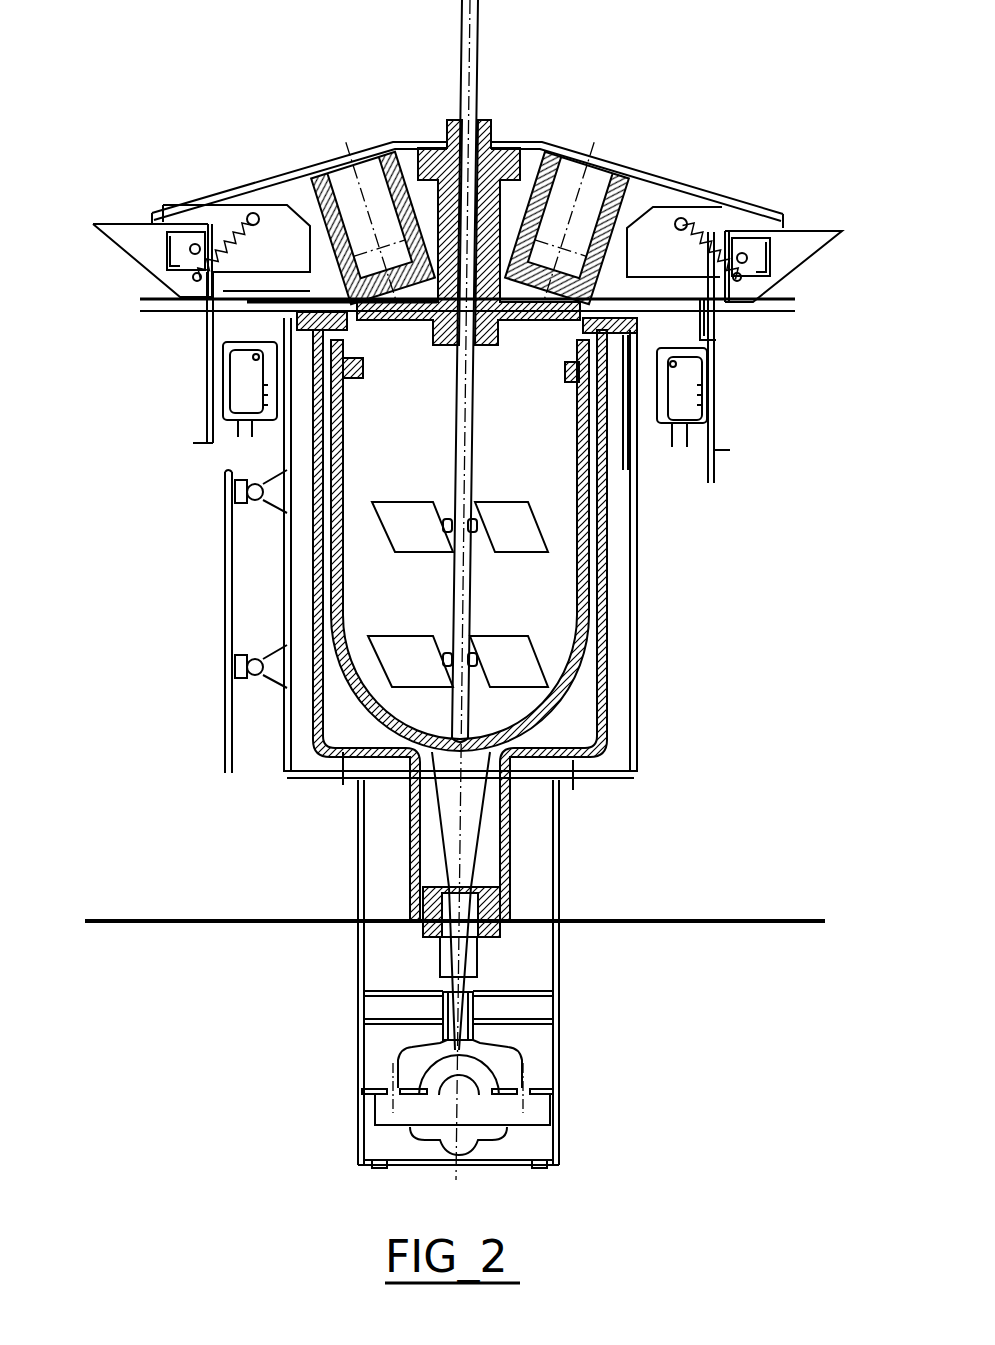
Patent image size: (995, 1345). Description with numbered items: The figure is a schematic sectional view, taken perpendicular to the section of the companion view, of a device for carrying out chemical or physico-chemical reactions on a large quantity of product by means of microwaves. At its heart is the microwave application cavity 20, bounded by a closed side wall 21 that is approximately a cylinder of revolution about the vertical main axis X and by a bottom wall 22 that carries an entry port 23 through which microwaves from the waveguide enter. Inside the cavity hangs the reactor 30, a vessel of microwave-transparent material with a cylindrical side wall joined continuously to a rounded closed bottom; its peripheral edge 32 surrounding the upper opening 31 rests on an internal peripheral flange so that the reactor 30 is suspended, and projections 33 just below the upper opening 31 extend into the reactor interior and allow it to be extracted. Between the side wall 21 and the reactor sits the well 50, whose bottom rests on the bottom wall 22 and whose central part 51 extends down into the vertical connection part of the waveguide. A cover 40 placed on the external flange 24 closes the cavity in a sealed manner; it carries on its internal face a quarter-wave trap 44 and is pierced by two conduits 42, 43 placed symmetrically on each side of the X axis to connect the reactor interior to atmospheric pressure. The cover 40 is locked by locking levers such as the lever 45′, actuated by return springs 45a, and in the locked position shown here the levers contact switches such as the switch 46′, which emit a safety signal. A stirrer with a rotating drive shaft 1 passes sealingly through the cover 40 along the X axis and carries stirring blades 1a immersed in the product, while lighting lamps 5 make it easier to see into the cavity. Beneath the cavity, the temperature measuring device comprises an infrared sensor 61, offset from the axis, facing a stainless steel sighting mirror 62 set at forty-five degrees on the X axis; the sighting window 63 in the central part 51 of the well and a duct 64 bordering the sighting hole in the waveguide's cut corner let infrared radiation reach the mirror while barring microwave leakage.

The rotating drive shaft 1 is at (478, 425).
The stirring blades 1a is at (525, 522).
The lighting lamps 5 is at (250, 498).
The microwave application cavity 20 is at (626, 668).
The closed side wall 21 is at (640, 606).
The bottom wall 22 is at (620, 782).
The entry port 23 is at (418, 785).
The flange 24 is at (793, 300).
The reactor 30 is at (592, 538).
The upper opening 31 is at (598, 328).
The peripheral edge 32 is at (627, 437).
The projections 33 is at (590, 470).
The cover 40 is at (678, 200).
The conduit 42 is at (352, 190).
The conduit 43 is at (592, 190).
The quarter-wave trap 44 is at (700, 338).
The locking lever 45′ is at (128, 222).
The return springs 45a is at (235, 238).
The switch 46′ is at (222, 382).
The well 50 is at (608, 722).
The central part of the well 51 is at (510, 842).
The infrared sensor 61 is at (485, 1072).
The sighting mirror 62 is at (502, 1094).
The sighting window 63 is at (482, 880).
The duct 64 is at (474, 1002).